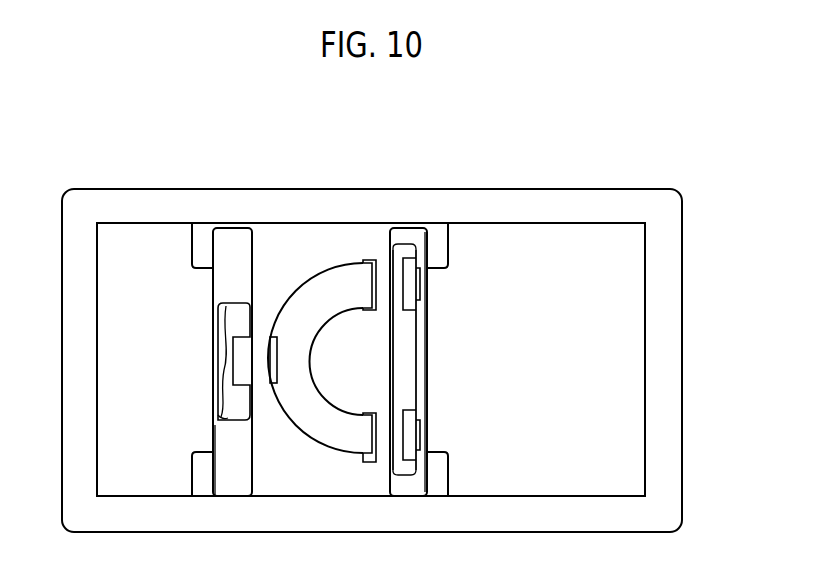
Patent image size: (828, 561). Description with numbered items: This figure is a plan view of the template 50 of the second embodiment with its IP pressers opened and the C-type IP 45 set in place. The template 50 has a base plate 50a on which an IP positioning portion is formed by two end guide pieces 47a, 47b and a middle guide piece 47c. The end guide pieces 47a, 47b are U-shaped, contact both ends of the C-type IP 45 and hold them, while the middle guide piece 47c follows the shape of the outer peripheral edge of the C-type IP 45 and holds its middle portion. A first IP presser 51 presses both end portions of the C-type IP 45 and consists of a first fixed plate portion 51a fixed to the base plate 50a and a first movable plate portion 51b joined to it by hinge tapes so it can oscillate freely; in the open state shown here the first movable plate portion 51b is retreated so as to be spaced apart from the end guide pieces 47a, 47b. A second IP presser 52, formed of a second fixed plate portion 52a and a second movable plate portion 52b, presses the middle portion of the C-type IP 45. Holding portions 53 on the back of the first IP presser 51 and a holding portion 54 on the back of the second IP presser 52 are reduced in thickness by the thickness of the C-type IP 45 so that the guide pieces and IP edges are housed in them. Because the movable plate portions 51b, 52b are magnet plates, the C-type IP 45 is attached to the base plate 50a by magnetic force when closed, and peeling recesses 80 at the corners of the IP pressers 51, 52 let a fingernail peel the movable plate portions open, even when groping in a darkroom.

The C-type IP 45 is at (305, 307).
The end guide piece 47a is at (366, 262).
The end guide piece 47b is at (366, 462).
The middle guide piece 47c is at (275, 383).
The template 50 is at (452, 188).
The base plate 50a is at (588, 260).
The first IP presser 51 is at (428, 345).
The first fixed plate portion 51a is at (420, 418).
The first movable plate portion 51b is at (402, 377).
The second IP presser 52 is at (212, 290).
The second fixed plate portion 52a is at (227, 437).
The second movable plate portion 52b is at (228, 318).
The holding portion 53 is at (408, 288).
The holding portion 54 is at (226, 352).
The peeling recess 80 is at (415, 228).